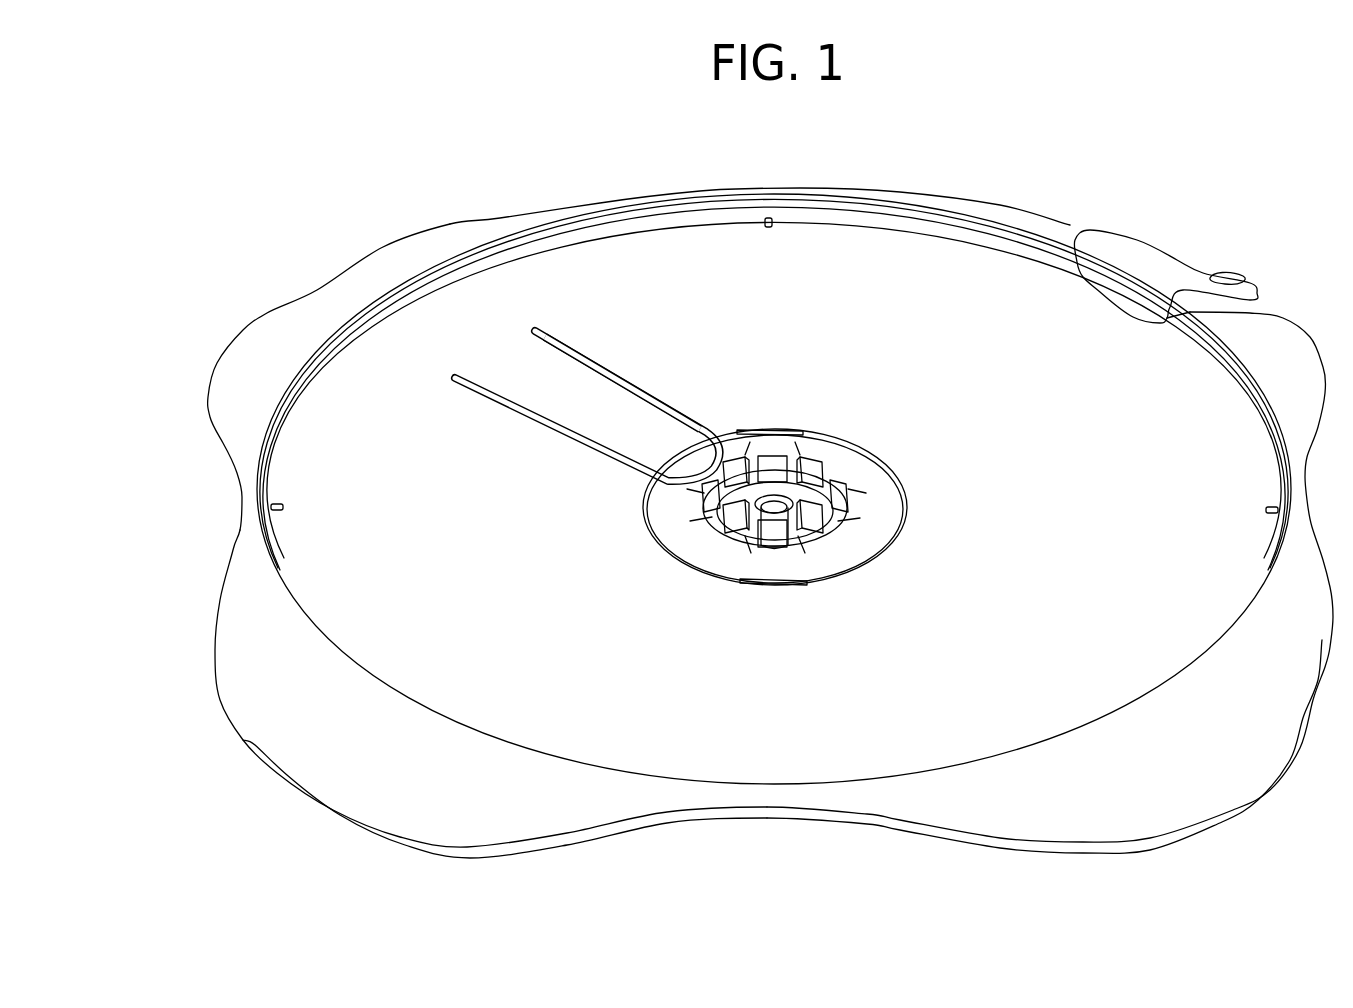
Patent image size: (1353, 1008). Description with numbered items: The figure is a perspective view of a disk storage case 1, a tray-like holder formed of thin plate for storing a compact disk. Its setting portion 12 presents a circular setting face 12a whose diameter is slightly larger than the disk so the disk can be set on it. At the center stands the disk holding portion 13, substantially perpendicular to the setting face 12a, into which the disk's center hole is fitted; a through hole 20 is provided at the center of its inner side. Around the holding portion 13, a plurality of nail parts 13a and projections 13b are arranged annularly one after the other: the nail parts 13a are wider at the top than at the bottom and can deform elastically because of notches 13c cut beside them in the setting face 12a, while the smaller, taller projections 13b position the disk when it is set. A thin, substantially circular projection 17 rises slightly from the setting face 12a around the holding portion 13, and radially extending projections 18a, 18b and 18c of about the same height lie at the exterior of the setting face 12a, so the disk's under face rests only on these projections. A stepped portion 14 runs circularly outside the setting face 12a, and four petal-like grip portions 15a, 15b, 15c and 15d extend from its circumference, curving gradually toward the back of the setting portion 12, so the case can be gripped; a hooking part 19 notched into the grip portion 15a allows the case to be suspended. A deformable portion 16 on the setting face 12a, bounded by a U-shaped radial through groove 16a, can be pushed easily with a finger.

The disk storage case 1 is at (1025, 172).
The setting portion 12 is at (385, 381).
The setting face 12a is at (537, 278).
The disk holding portion 13 is at (826, 467).
The nail parts 13a is at (832, 487).
The projections 13b is at (730, 523).
The notches 13c is at (745, 457).
The stepped portion 14 is at (905, 218).
The grip portion 15a is at (1067, 222).
The grip portion 15b is at (1243, 790).
The grip portion 15c is at (368, 810).
The grip portion 15d is at (285, 315).
The deformable portion 16 is at (598, 396).
The through groove 16a is at (667, 405).
The projection 17 is at (763, 585).
The projection 18a is at (1266, 509).
The projection 18b is at (770, 228).
The projection 18c is at (283, 505).
The hooking part 19 is at (1153, 263).
The through hole 20 is at (775, 497).